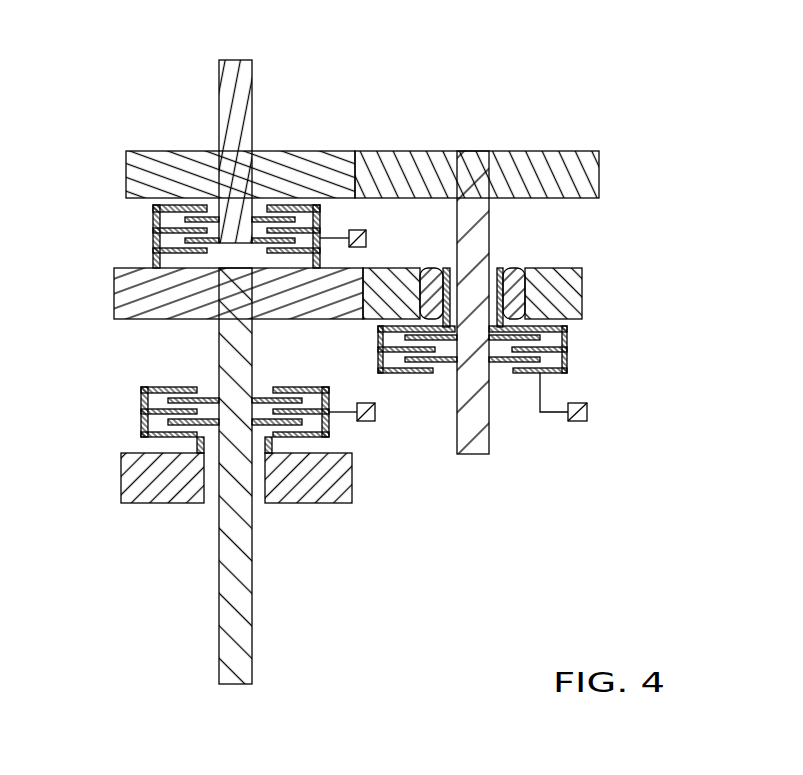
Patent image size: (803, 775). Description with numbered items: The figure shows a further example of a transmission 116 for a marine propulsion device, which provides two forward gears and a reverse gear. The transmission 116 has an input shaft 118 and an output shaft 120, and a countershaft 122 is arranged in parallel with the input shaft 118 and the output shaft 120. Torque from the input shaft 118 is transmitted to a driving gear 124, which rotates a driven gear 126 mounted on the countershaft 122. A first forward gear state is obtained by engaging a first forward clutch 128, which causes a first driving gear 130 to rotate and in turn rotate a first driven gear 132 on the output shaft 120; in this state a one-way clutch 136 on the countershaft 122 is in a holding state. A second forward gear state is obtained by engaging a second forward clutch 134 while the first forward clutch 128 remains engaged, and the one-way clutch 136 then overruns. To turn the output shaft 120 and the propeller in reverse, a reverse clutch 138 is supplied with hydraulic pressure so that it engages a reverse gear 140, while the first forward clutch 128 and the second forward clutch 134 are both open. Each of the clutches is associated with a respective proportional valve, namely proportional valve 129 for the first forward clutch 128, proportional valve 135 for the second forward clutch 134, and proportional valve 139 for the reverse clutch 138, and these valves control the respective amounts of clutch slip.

The transmission 116 is at (620, 113).
The input shaft 118 is at (223, 103).
The output shaft 120 is at (251, 602).
The countershaft 122 is at (492, 238).
The driving gear 124 is at (137, 176).
The driven gear 126 is at (404, 165).
The first forward clutch 128 is at (570, 350).
The proportional valve 129 is at (588, 410).
The first driving gear 130 is at (571, 287).
The first driven gear 132 is at (114, 294).
The second forward clutch 134 is at (153, 226).
The proportional valve 135 is at (366, 239).
The one-way clutch 136 is at (516, 270).
The reverse clutch 138 is at (142, 398).
The proportional valve 139 is at (376, 410).
The reverse gear 140 is at (123, 472).